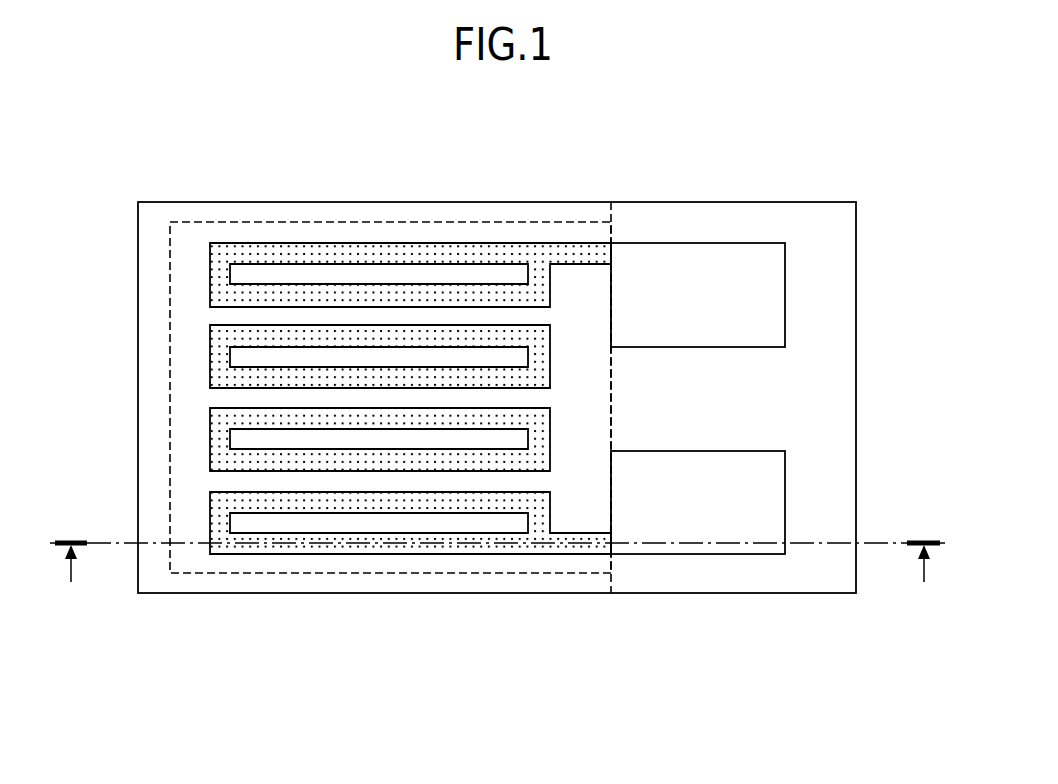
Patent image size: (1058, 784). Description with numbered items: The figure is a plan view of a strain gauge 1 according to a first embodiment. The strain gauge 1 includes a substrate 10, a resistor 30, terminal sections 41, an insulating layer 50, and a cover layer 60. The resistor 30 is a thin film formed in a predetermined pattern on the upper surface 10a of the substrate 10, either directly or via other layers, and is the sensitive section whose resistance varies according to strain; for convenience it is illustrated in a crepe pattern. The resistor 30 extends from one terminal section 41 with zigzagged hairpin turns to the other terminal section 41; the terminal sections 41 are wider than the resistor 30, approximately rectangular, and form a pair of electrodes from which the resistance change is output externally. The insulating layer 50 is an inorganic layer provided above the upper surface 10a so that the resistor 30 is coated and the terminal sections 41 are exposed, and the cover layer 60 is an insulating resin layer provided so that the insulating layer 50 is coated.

The strain gauge 1 is at (74, 144).
The substrate 10 is at (864, 288).
The upper surface 10a is at (825, 403).
The resistor 30 is at (393, 252).
The terminal sections 41 is at (718, 275).
The insulating layer 50 is at (505, 222).
The cover layer 60 is at (611, 232).